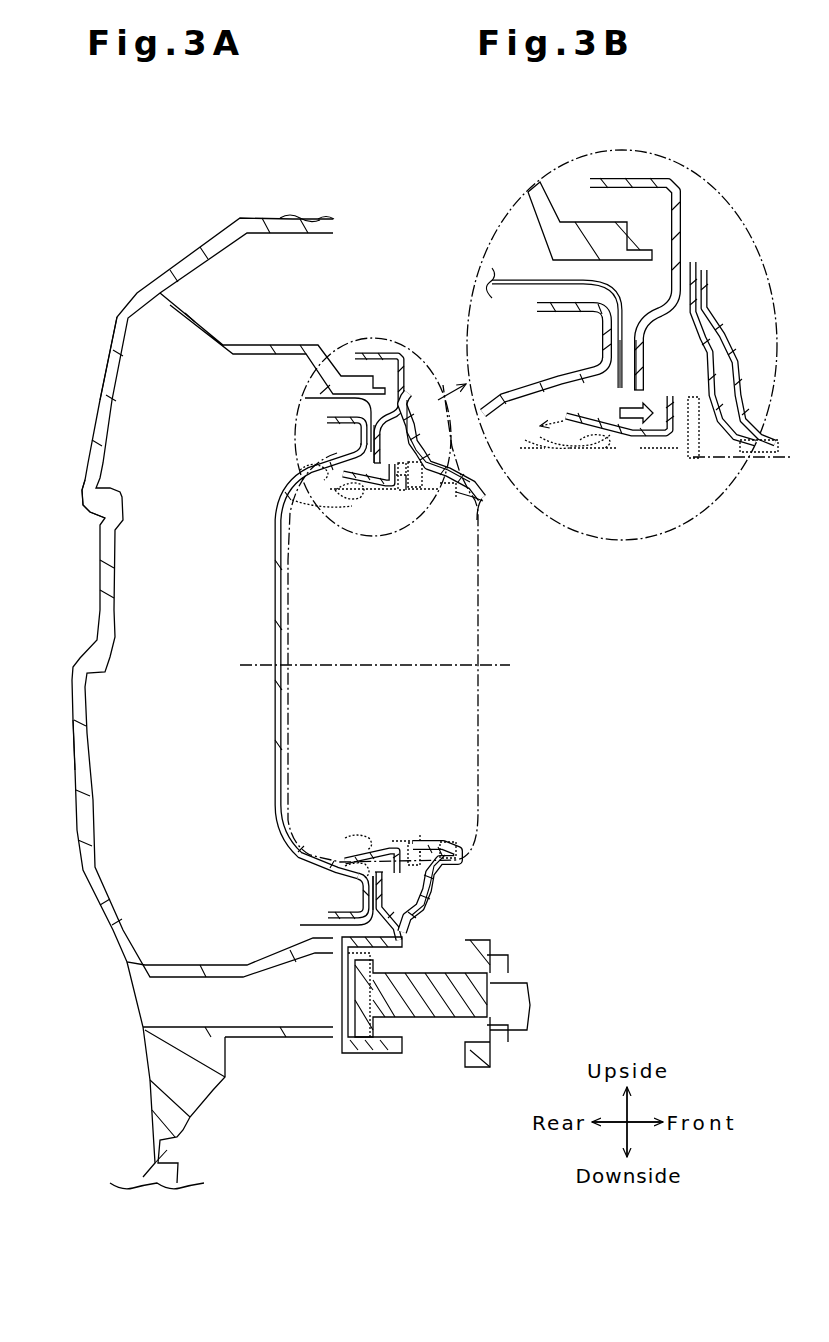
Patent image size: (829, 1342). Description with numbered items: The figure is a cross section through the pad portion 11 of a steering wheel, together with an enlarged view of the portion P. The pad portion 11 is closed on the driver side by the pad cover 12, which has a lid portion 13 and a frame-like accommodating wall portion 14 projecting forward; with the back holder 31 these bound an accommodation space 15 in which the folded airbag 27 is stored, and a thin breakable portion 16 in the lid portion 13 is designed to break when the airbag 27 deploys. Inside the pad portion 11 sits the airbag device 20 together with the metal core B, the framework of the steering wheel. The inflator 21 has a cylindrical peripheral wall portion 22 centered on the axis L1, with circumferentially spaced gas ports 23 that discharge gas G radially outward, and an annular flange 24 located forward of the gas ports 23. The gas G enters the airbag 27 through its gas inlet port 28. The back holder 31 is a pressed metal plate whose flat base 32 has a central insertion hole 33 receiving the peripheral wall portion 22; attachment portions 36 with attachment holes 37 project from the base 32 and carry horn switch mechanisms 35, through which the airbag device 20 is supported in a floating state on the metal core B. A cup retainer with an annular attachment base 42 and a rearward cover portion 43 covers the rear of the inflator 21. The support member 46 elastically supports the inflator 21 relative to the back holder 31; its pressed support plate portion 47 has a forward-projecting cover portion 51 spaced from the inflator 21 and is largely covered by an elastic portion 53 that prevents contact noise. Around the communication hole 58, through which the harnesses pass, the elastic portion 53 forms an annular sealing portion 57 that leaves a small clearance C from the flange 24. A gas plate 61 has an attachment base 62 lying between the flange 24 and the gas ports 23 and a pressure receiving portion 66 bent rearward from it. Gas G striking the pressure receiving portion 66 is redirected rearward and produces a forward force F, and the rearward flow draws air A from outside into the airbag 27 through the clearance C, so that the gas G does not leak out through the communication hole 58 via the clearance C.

In FIG. 3A, the pad portion 11 is at (128, 206).
In FIG. 3A, the pad cover 12 is at (118, 320).
In FIG. 3A, the lid portion 13 is at (84, 753).
In FIG. 3A, the accommodating wall portion 14 is at (214, 320).
In FIG. 3B, the accommodating wall portion 14 is at (563, 204).
In FIG. 3A, the accommodation space 15 is at (166, 657).
In FIG. 3A, the breakable portion 16 is at (89, 484).
In FIG. 3A, the airbag device 20 is at (161, 588).
In FIG. 3A, the inflator 21 is at (470, 478).
In FIG. 3A, the peripheral wall portion 22 is at (307, 860).
In FIG. 3B, the peripheral wall portion 22 is at (559, 439).
In FIG. 3A, the gas ports 23 is at (364, 498).
In FIG. 3B, the gas ports 23 is at (590, 451).
In FIG. 3A, the flange 24 is at (415, 842).
In FIG. 3B, the flange 24 is at (715, 466).
In FIG. 3A, the airbag 27 is at (311, 928).
In FIG. 3B, the airbag 27 is at (525, 276).
In FIG. 3A, the gas inlet port 28 is at (364, 885).
In FIG. 3B, the gas inlet port 28 is at (619, 381).
In FIG. 3A, the back holder 31 is at (359, 343).
In FIG. 3B, the back holder 31 is at (633, 176).
In FIG. 3A, the base 32 is at (386, 682).
In FIG. 3B, the base 32 is at (645, 342).
In FIG. 3A, the insertion hole 33 is at (378, 870).
In FIG. 3B, the insertion hole 33 is at (642, 390).
In FIG. 3A, the horn switch mechanism 35 is at (402, 1095).
In FIG. 3A, the attachment portion 36 is at (412, 940).
In FIG. 3A, the attachment hole 37 is at (404, 1039).
In FIG. 3A, the attachment base 42 is at (344, 949).
In FIG. 3B, the attachment base 42 is at (587, 341).
In FIG. 3A, the cover portion 43 is at (278, 537).
In FIG. 3B, the cover portion 43 is at (503, 398).
In FIG. 3A, the support member 46 is at (464, 851).
In FIG. 3B, the support member 46 is at (715, 320).
In FIG. 3A, the support plate portion 47 is at (446, 864).
In FIG. 3B, the support plate portion 47 is at (711, 327).
In FIG. 3A, the cover portion 51 is at (486, 502).
In FIG. 3B, the elastic portion 53 is at (740, 380).
In FIG. 3A, the sealing portion 57 is at (424, 495).
In FIG. 3B, the sealing portion 57 is at (762, 406).
In FIG. 3A, the communication hole 58 is at (482, 516).
In FIG. 3A, the gas plate 61 is at (390, 846).
In FIG. 3B, the gas plate 61 is at (660, 453).
In FIG. 3A, the attachment base 62 is at (410, 663).
In FIG. 3B, the attachment base 62 is at (698, 448).
In FIG. 3A, the pressure receiving portion 66 is at (305, 469).
In FIG. 3B, the pressure receiving portion 66 is at (600, 457).
In FIG. 3A, the portion P is at (402, 347).
In FIG. 3B, the portion P is at (705, 184).
In FIG. 3A, the axis L1 is at (490, 670).
In FIG. 3B, the air A is at (786, 462).
In FIG. 3A, the metal core B is at (502, 1037).
In FIG. 3B, the clearance C is at (680, 394).
In FIG. 3B, the force F is at (631, 448).
In FIG. 3B, the gas G is at (541, 412).